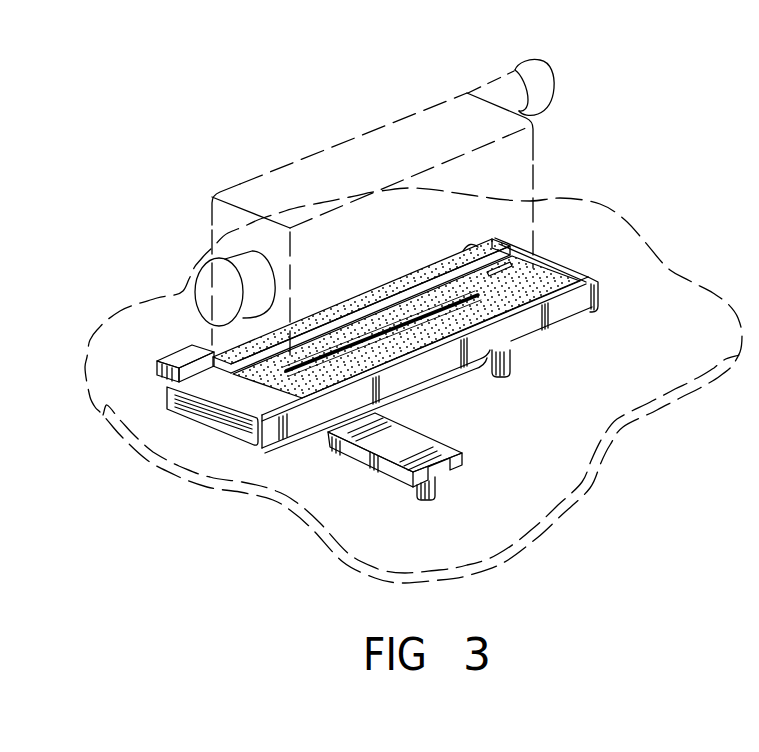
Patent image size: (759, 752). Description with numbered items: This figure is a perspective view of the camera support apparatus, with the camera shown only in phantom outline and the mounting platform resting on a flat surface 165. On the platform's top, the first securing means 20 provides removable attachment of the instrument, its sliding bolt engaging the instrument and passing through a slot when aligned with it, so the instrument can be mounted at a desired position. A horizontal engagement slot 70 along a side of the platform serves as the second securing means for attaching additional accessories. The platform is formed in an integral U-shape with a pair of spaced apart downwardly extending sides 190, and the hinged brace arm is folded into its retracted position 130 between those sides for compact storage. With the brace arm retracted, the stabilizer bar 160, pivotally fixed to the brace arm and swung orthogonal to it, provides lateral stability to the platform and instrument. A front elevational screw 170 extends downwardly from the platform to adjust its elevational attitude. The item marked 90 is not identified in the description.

The first securing means 20 is at (398, 325).
The horizontal engagement slot 70 is at (415, 312).
The alignment tab 90 is at (466, 247).
The retracted position 130 is at (444, 388).
The stabilizer bar 160 is at (362, 460).
The rough or uneven surface 165 is at (531, 508).
The front elevational screw 170 is at (512, 362).
The downwardly extending sides 190 is at (566, 316).